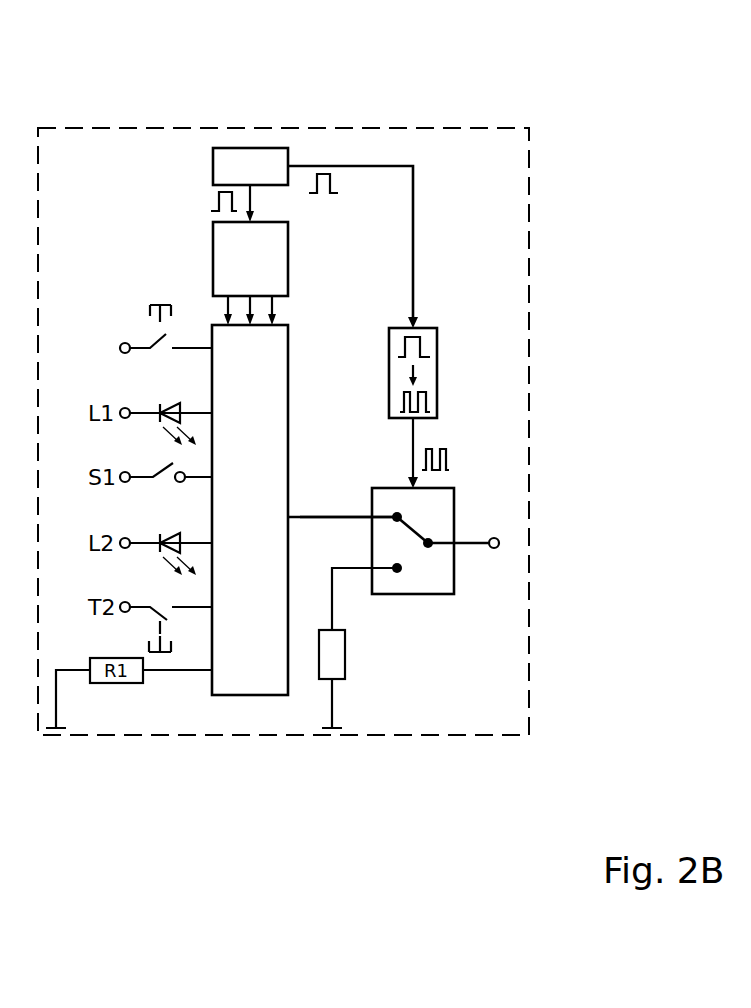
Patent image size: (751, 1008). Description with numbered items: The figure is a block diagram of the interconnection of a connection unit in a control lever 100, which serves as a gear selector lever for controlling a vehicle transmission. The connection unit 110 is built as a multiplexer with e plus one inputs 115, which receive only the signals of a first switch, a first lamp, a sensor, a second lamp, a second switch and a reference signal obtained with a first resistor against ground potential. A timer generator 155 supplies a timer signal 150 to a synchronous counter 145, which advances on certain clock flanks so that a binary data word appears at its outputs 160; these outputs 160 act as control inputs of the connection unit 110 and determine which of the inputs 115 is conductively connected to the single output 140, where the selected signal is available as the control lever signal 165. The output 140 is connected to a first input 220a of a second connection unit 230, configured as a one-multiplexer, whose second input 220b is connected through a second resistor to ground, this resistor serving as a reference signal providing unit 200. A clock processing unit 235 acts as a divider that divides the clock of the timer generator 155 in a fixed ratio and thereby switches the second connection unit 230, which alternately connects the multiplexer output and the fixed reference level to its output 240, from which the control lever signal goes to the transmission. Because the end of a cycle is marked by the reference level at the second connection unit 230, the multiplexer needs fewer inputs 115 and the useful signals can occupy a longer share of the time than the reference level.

The control lever 100 is at (375, 128).
The connection unit 110 is at (247, 695).
The inputs 115 is at (140, 323).
The output 140 is at (320, 517).
The synchronous counter 145 is at (213, 270).
The timer signal 150 is at (252, 200).
The timer generator 155 is at (235, 148).
The outputs of the synchronous counter 160 is at (203, 307).
The control lever signal 165 is at (483, 540).
The reference signal providing unit 200 is at (305, 697).
The first input of the second connection unit 220a is at (345, 517).
The second input of the second connection unit 220b is at (343, 568).
The second connection unit 230 is at (457, 567).
The clock processing unit 235 is at (437, 375).
The output of the second connection unit 240 is at (462, 540).